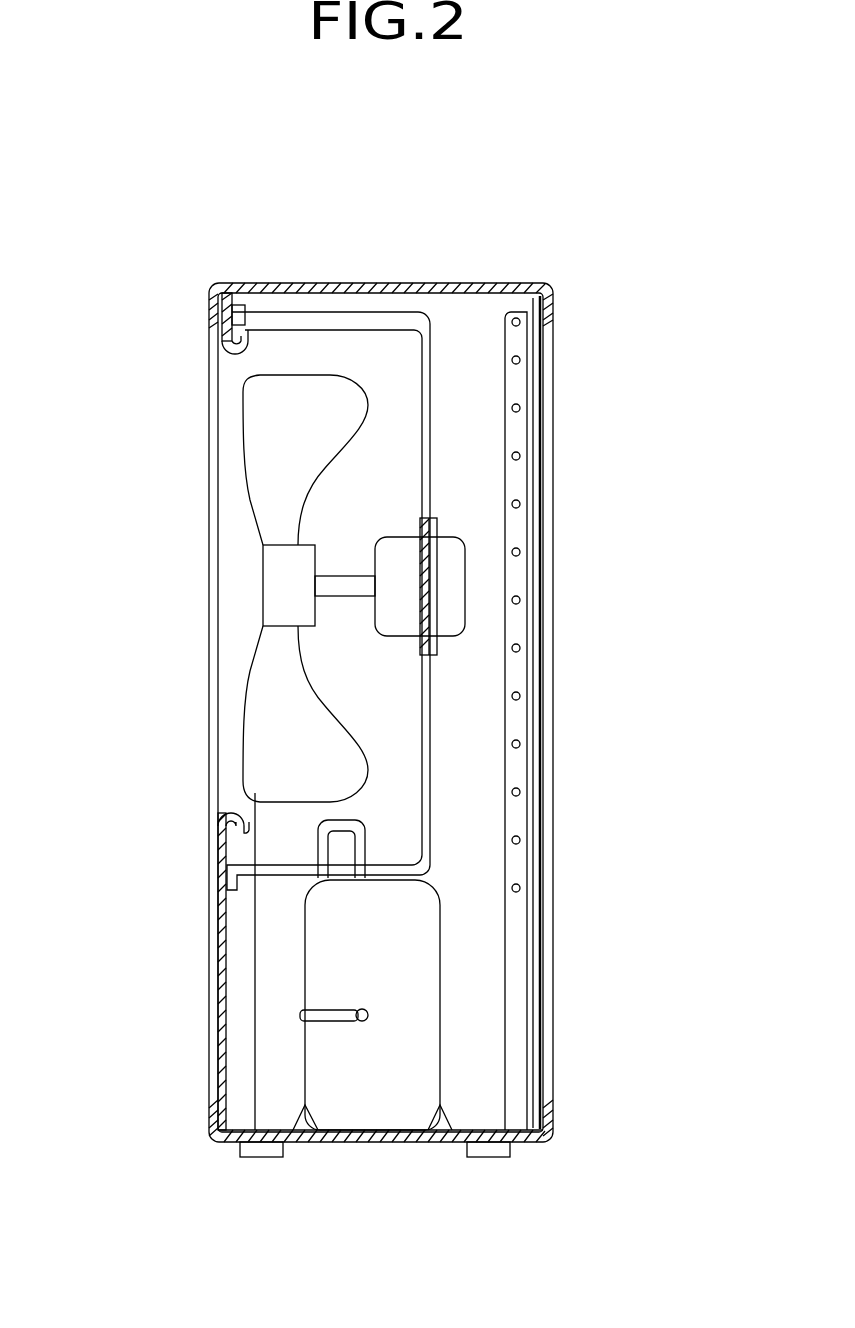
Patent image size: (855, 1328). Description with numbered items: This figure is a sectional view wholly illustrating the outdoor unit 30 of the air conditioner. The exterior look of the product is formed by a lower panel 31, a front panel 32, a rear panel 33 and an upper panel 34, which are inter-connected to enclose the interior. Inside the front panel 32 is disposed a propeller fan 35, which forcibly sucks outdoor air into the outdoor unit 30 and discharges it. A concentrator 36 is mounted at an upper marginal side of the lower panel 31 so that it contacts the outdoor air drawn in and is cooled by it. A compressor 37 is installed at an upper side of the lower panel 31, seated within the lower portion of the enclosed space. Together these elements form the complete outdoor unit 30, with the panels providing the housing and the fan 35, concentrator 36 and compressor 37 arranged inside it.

The outdoor unit 30 is at (603, 507).
The lower panel 31 is at (413, 1145).
The front panel 32 is at (218, 972).
The rear panel 33 is at (550, 902).
The upper panel 34 is at (383, 283).
The propeller fan 35 is at (259, 462).
The concentrator 36 is at (511, 768).
The compressor 37 is at (318, 1030).